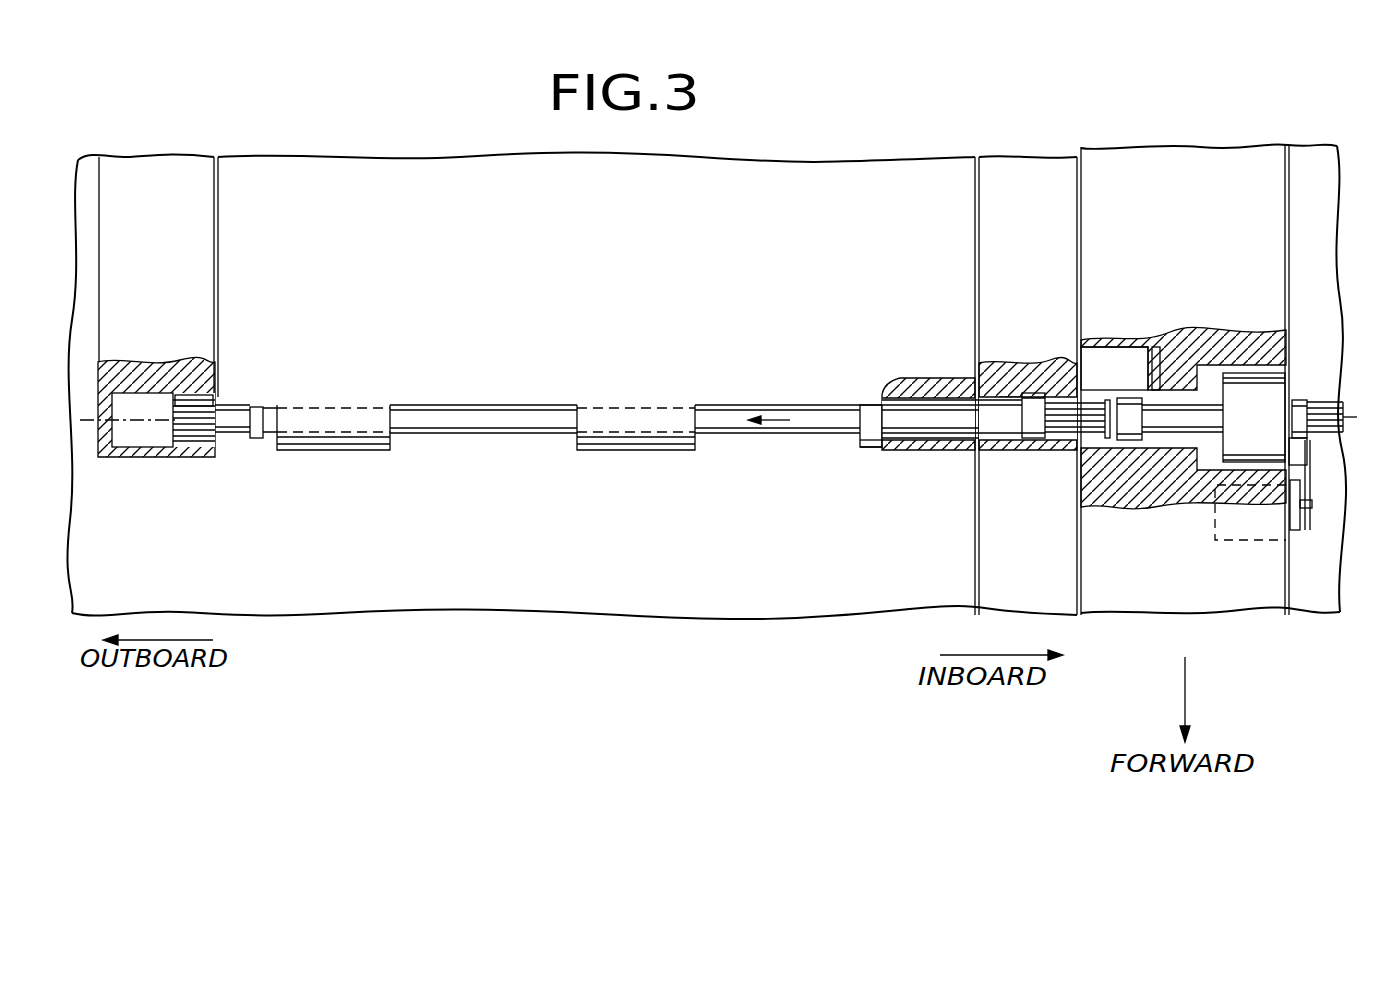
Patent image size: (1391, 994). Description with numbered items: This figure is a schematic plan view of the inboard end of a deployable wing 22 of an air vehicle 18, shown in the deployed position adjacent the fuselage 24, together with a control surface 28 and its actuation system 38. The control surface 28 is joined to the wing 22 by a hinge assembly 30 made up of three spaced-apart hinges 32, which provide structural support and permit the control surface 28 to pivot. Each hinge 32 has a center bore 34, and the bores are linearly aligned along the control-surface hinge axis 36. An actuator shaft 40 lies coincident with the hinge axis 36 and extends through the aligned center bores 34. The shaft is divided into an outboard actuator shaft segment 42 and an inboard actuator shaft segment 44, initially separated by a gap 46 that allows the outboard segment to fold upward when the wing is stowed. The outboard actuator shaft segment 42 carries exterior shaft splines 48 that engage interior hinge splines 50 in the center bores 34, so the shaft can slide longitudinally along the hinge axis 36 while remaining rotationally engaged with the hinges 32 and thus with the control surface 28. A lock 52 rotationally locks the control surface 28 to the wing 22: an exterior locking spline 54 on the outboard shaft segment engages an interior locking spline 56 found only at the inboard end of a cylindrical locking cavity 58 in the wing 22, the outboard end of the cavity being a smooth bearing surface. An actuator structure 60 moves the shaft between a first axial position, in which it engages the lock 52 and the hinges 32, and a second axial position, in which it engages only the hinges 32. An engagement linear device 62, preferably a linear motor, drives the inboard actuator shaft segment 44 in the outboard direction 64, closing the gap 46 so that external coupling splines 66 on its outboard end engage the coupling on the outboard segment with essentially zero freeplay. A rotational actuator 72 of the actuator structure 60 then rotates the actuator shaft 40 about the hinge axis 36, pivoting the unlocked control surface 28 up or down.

The air vehicle 18 is at (1310, 134).
The wing 22 is at (292, 602).
The fuselage 24 is at (1213, 160).
The control surface 28 is at (733, 172).
The hinge assembly 30 is at (312, 458).
The hinge 32 is at (347, 441).
The center bore 34 is at (267, 441).
The control-surface hinge axis 36 is at (80, 421).
The actuation system 38 is at (1063, 448).
The actuator shaft 40 is at (450, 442).
The outboard actuator shaft segment 42 is at (233, 433).
The inboard actuator shaft segment 44 is at (1291, 410).
The gap 46 is at (1050, 400).
The exterior shaft splines 48 is at (992, 430).
The interior hinge splines 50 is at (950, 434).
The lock 52 is at (176, 378).
The exterior locking spline 54 is at (188, 437).
The interior locking spline 56 is at (207, 400).
The cylindrical locking cavity 58 is at (144, 393).
The actuator structure 60 is at (1291, 360).
The engagement linear device 62 is at (1249, 373).
The outboard direction 64 is at (789, 410).
The external coupling splines 66 is at (1085, 405).
The rotational actuator 72 is at (1290, 540).